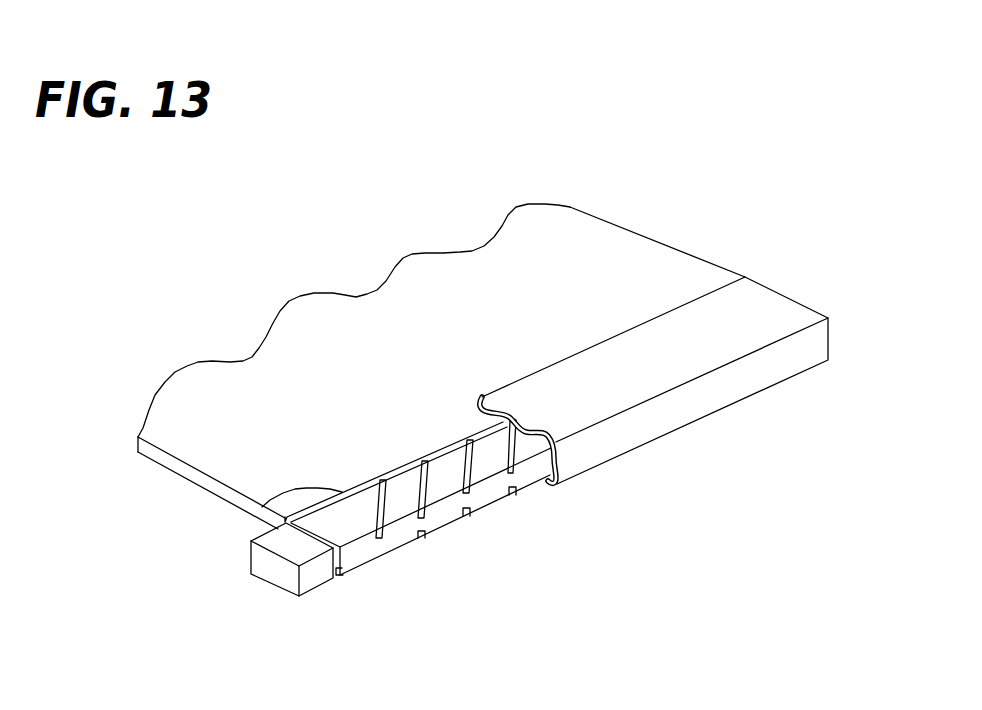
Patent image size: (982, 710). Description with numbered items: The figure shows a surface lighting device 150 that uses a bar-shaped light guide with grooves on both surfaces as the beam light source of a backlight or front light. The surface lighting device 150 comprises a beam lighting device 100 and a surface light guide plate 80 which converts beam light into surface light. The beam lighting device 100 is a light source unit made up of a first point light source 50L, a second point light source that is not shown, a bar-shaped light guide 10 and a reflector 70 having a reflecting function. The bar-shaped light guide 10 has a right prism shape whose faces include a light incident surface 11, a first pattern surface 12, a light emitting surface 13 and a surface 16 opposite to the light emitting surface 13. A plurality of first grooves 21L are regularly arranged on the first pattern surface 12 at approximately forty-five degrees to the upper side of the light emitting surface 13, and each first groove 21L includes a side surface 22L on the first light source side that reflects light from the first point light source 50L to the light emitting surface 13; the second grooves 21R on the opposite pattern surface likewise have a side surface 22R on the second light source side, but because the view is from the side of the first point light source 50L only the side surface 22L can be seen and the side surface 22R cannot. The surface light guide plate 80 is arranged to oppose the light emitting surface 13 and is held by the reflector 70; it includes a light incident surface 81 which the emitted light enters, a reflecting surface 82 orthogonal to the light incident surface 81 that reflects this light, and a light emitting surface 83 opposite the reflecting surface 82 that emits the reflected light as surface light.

The surface lighting device 150 is at (657, 205).
The surface light guide plate 80 is at (211, 407).
The light emitting surface 83 is at (316, 325).
The reflecting surface 82 is at (201, 490).
The light incident surface 81 is at (246, 528).
The first point light source 50L is at (281, 571).
The light emitting surface 13 is at (383, 379).
The first pattern surface 12 is at (418, 327).
The bar-shaped light guide 10 is at (430, 497).
The light incident surface 11 is at (348, 608).
The first grooves 21L is at (412, 549).
The side surface on the first light source side 22L is at (396, 598).
The second grooves 21R is at (452, 554).
The side surface on the second light source side 22R is at (462, 562).
The opposite surface to the light-emitting surface 16 is at (552, 480).
The reflector 70 is at (656, 366).
The beam lighting device 100 is at (619, 477).